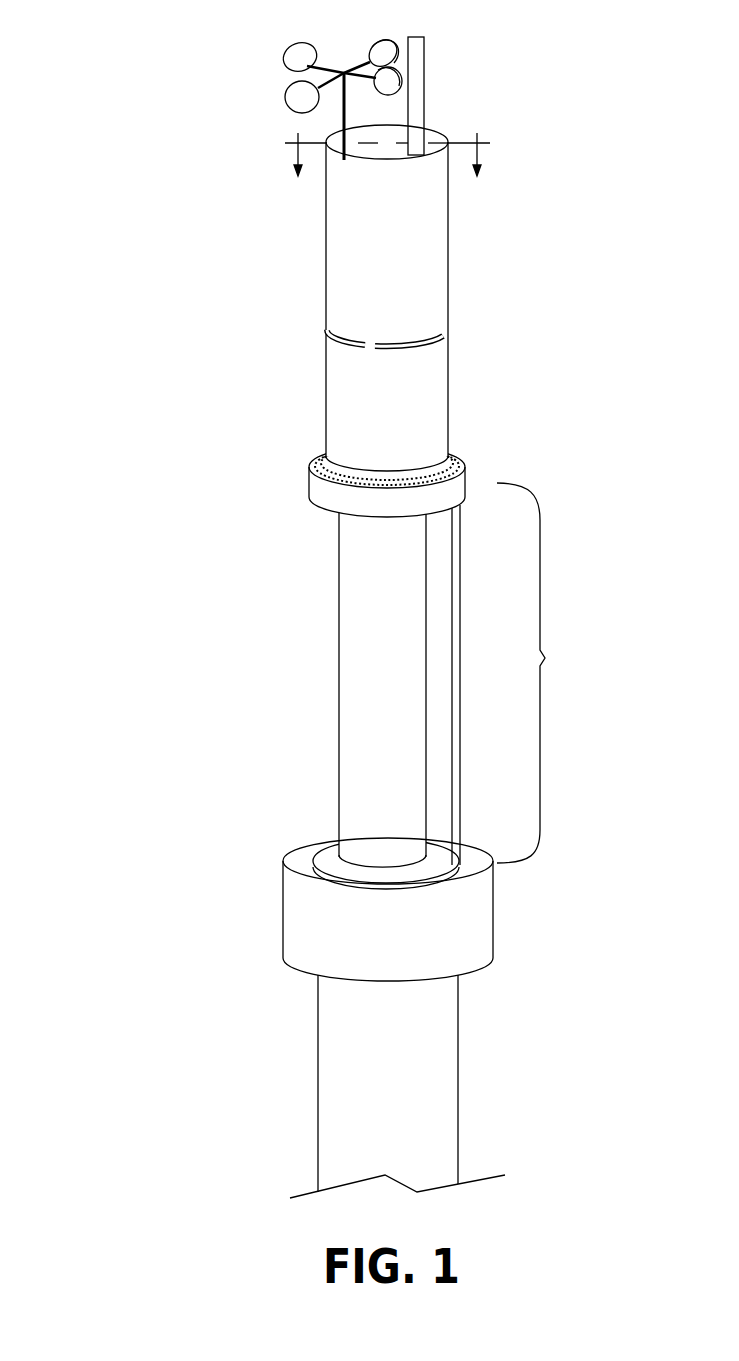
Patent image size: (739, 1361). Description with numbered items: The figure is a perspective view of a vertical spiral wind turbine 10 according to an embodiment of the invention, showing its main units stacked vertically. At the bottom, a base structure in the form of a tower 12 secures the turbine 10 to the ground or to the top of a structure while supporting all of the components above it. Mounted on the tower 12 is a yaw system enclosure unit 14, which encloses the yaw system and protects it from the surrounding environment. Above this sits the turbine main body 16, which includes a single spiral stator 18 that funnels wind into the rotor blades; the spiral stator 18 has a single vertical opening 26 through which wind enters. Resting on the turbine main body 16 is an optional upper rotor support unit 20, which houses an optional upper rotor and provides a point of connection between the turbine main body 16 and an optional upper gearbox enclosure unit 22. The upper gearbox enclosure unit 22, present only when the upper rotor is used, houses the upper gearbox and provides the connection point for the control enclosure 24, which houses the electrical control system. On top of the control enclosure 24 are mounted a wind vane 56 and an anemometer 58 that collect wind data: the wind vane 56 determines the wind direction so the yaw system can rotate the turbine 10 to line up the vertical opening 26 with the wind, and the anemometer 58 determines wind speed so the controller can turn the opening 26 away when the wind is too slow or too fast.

The vertical wind turbine 10 is at (128, 242).
The tower 12 is at (458, 1032).
The yaw system enclosure unit 14 is at (493, 930).
The turbine main body 16 is at (545, 658).
The spiral stator 18 is at (452, 773).
The upper rotor support unit 20 is at (465, 463).
The upper gearbox enclosure unit 22 is at (448, 372).
The control enclosure 24 is at (448, 232).
The single vertical opening 26 is at (440, 678).
The wind vane 56 is at (424, 68).
The anemometer 58 is at (292, 58).